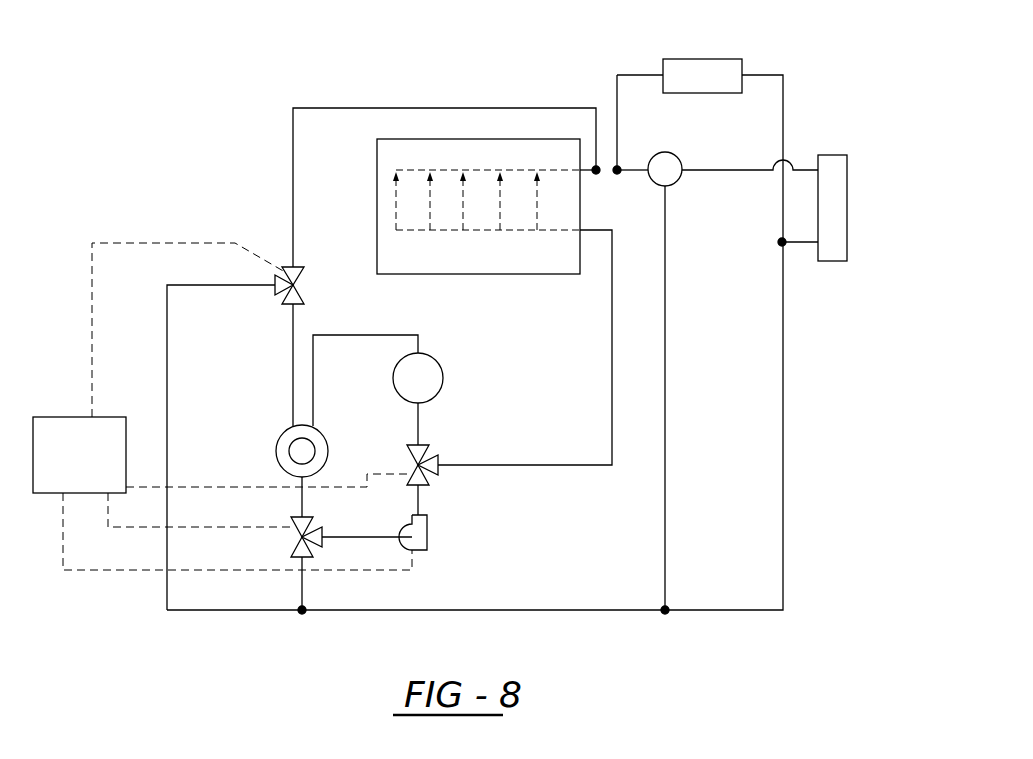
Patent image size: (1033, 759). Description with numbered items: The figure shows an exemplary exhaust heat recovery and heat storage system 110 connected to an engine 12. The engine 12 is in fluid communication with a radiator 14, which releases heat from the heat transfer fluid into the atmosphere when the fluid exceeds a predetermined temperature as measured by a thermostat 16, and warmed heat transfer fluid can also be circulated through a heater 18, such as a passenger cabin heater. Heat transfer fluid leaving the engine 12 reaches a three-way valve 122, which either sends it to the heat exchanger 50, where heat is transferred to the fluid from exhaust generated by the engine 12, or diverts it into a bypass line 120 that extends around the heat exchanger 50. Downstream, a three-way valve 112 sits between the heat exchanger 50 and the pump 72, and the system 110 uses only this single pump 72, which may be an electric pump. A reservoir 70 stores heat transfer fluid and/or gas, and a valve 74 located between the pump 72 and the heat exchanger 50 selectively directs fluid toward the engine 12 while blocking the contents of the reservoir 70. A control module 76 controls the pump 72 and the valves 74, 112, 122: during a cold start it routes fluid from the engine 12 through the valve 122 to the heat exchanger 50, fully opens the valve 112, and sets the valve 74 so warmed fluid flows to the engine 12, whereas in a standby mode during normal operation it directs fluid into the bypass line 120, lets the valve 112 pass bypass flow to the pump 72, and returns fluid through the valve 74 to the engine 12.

The engine 12 is at (377, 197).
The radiator 14 is at (833, 261).
The thermostat 16 is at (715, 59).
The heater 18 is at (678, 181).
The heat exchanger 50 is at (280, 447).
The reservoir 70 is at (443, 375).
The pump 72 is at (427, 530).
The valve 74 is at (407, 455).
The control module 76 is at (63, 417).
The exhaust heat recovery and heat storage system 110 is at (82, 604).
The three-way valve 112 is at (318, 527).
The bypass line 120 is at (167, 365).
The three-way valve 122 is at (305, 280).